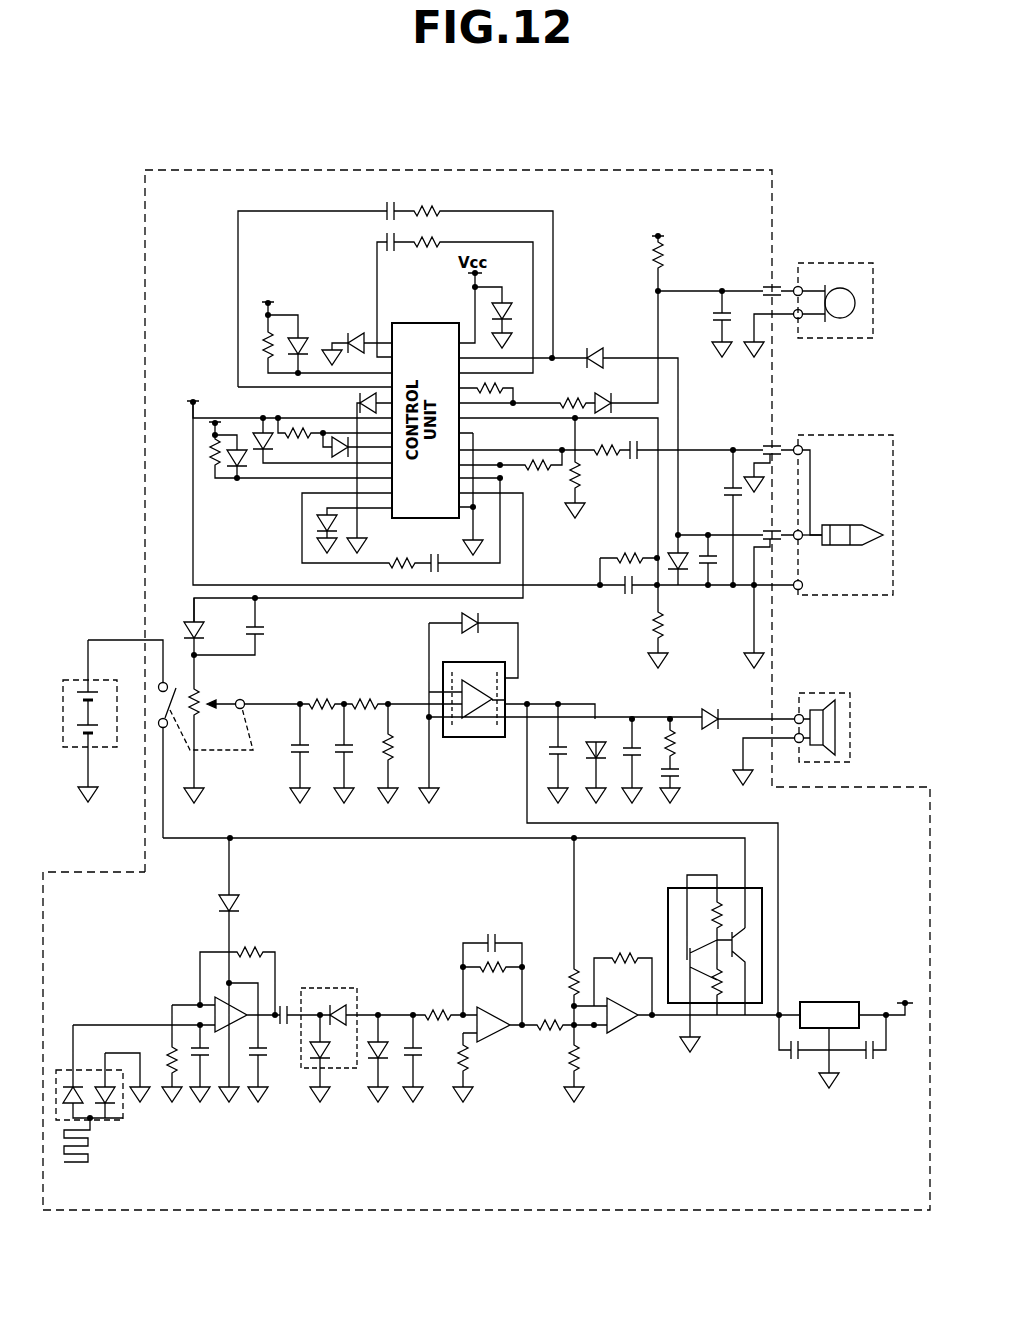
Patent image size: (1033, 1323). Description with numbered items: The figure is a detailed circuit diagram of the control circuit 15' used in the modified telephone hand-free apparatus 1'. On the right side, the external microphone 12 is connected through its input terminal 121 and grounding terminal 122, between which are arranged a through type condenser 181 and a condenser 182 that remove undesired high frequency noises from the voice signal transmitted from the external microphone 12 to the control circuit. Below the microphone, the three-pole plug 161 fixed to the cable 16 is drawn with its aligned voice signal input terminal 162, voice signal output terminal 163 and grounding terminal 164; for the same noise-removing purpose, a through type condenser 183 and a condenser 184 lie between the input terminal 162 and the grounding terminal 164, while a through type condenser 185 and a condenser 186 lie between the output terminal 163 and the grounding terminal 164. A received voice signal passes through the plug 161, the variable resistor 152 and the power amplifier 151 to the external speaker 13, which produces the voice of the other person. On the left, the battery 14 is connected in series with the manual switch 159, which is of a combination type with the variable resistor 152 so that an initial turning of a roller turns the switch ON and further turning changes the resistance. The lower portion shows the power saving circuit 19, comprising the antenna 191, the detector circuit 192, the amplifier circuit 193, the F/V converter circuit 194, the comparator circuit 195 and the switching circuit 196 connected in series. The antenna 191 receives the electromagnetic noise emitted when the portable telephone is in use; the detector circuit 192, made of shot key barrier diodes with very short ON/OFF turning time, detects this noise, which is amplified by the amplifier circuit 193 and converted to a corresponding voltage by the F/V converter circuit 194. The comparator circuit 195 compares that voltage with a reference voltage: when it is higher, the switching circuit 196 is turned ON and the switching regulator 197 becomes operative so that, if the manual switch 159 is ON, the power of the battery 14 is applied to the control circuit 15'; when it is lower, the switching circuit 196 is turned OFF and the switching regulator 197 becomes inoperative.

The modified telephone hand-free apparatus 1' is at (486, 648).
The control circuit 15' is at (486, 668).
The external microphone 12 is at (860, 260).
The input terminal 121 is at (743, 288).
The grounding terminal 122 is at (780, 316).
The through type condenser 181 is at (775, 282).
The condenser 182 is at (713, 327).
The through type condenser 183 is at (773, 432).
The condenser 184 is at (723, 490).
The through type condenser 185 is at (778, 522).
The condenser 186 is at (722, 562).
The cable 16 is at (840, 600).
The 3P-plug 161 is at (878, 548).
The voice signal input terminal 162 is at (813, 487).
The voice signal output terminal 163 is at (813, 540).
The grounding terminal 164 is at (810, 593).
The battery 14 is at (67, 675).
The manual switch 159 is at (158, 707).
The variable resistor 152 is at (207, 692).
The power amplifier 151 is at (470, 723).
The external speaker 13 is at (855, 732).
The power saving circuit 19 is at (589, 1114).
The antenna 191 is at (88, 1153).
The detector circuit 192 is at (125, 1118).
The amplifier circuit 193 is at (189, 995).
The F/V converter circuit 194 is at (540, 1115).
The comparator circuit 195 is at (625, 1032).
The switching circuit 196 is at (728, 988).
The switching regulator 197 is at (835, 1002).